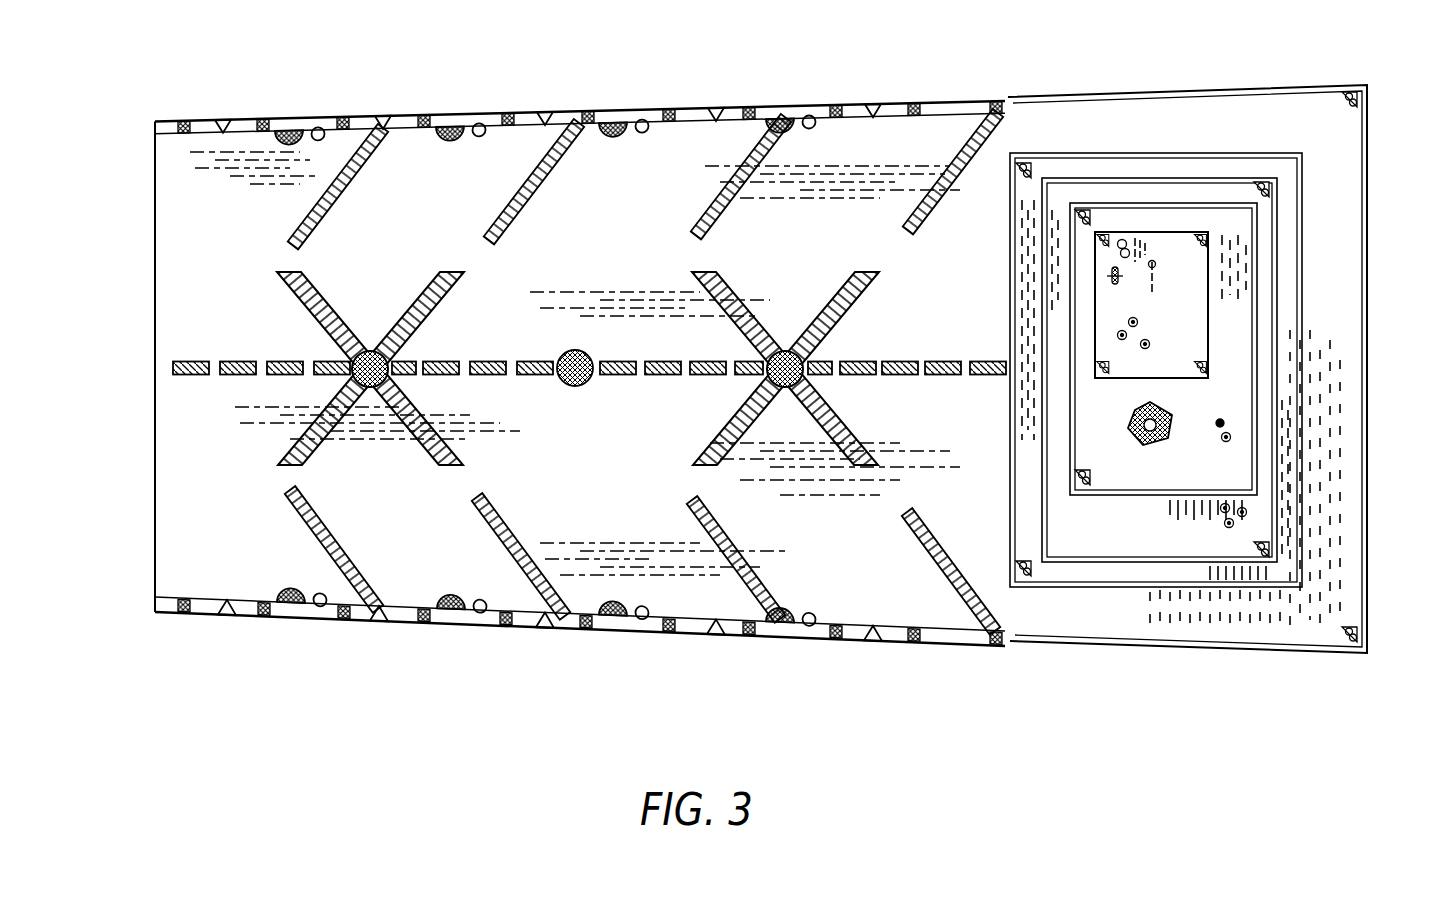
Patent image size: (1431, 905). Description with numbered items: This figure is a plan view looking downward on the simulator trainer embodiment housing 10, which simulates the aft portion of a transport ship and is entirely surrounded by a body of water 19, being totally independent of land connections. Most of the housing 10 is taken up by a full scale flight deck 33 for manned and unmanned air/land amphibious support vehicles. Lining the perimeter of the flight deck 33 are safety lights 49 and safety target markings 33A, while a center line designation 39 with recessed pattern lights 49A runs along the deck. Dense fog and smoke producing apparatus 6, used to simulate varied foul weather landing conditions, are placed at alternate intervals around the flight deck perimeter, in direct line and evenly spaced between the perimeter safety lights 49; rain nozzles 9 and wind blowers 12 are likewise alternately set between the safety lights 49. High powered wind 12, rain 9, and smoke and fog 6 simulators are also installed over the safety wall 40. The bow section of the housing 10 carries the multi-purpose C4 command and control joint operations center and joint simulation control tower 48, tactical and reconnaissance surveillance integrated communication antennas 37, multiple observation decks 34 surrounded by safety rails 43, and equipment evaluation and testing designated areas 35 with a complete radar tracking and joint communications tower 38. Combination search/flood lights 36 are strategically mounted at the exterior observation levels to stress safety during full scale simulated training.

The dense fog and smoke producing apparatus 6 is at (733, 84).
The rain nozzles 9 is at (655, 118).
The simulator trainer embodiment housing 10 is at (791, 99).
The wind blowers 12 is at (627, 112).
The body of water 19 is at (106, 354).
The flight deck 33 is at (660, 253).
The safety target markings 33A is at (350, 320).
The multiple observation decks 34 is at (1222, 236).
The equipment evaluation and testing designated areas 35 is at (1112, 470).
The combination search/flood lights 36 is at (1018, 179).
The integrated communication antennas 37 is at (1125, 339).
The radar tracking and joint communications tower 38 is at (1149, 421).
The center line designation 39 is at (486, 361).
The safety wall 40 is at (1010, 306).
The safety rails 43 is at (1084, 158).
The joint simulation control tower 48 is at (1122, 326).
The safety lights 49 is at (583, 112).
The recessed pattern lights 49A is at (582, 386).